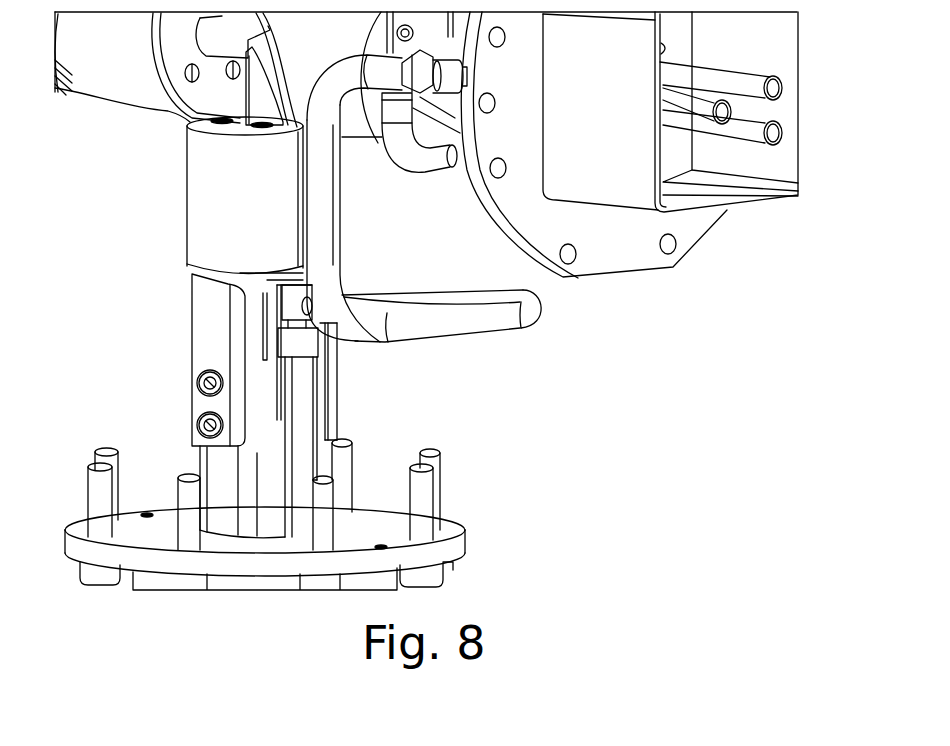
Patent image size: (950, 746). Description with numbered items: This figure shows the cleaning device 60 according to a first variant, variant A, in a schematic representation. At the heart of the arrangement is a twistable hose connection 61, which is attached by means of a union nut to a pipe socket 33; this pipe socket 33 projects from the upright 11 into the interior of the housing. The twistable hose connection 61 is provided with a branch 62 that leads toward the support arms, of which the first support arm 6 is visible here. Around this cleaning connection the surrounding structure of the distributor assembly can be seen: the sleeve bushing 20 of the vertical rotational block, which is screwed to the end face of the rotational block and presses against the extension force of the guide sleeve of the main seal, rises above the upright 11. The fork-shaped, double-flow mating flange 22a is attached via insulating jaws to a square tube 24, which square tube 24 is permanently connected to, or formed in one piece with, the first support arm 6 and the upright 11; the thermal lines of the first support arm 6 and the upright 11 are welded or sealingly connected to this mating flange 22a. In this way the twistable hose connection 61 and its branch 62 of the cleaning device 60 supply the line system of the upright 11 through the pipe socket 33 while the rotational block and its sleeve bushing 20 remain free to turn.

The first support arm 6 is at (612, 277).
The upright 11 is at (460, 540).
The sleeve bushing 20 is at (200, 191).
The mating flange 22a is at (205, 336).
The square tube 24 is at (632, 177).
The pipe socket 33 is at (313, 387).
The cleaning device 60 is at (364, 265).
The twistable hose connection 61 is at (293, 313).
The branch 62 is at (410, 80).